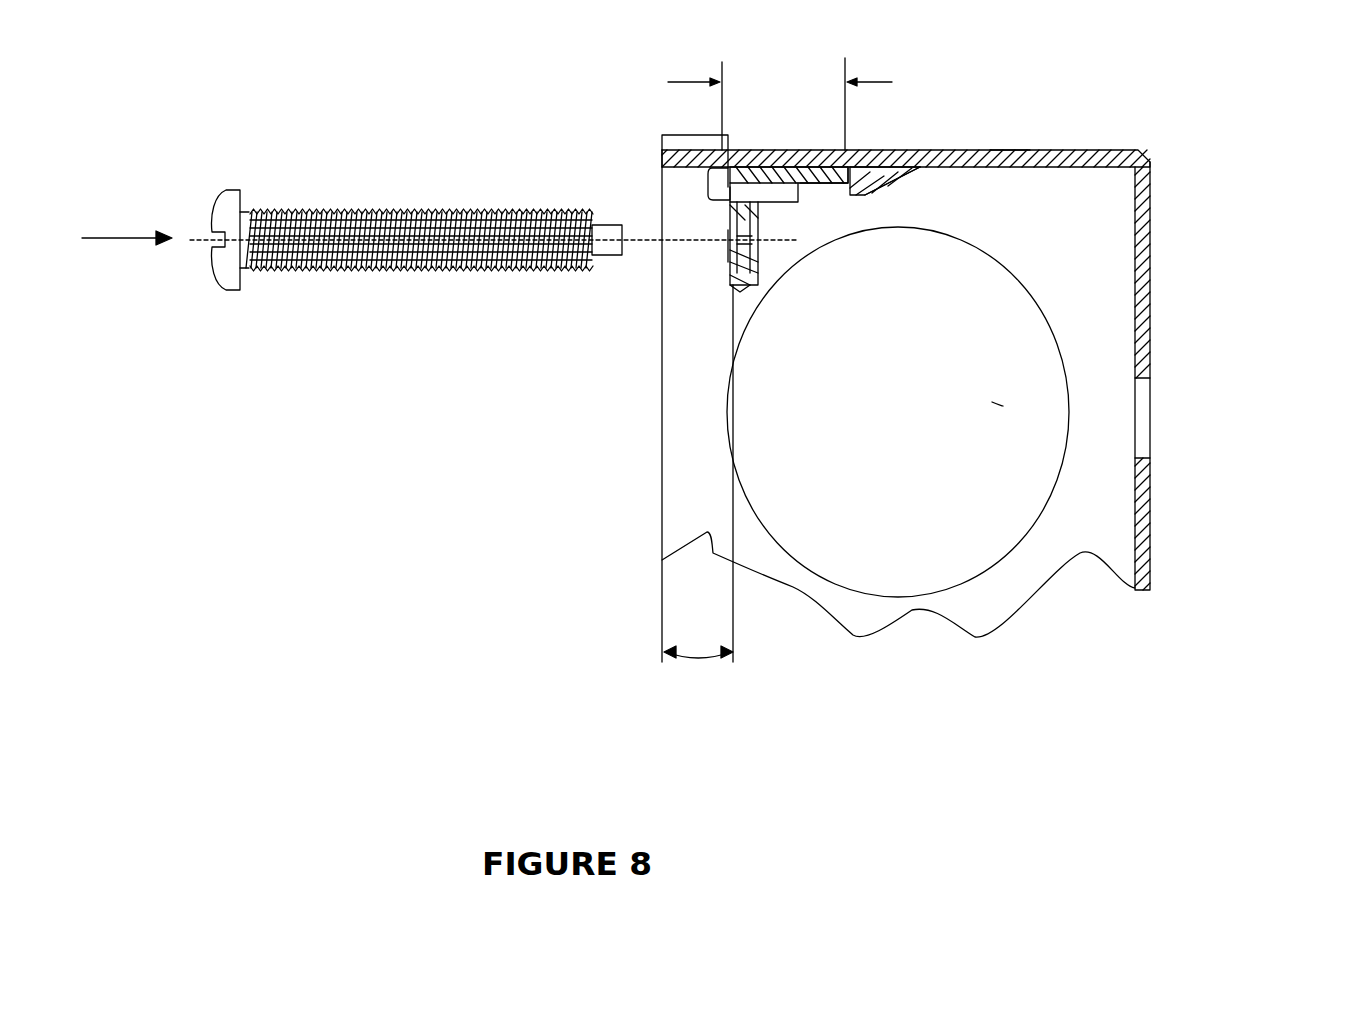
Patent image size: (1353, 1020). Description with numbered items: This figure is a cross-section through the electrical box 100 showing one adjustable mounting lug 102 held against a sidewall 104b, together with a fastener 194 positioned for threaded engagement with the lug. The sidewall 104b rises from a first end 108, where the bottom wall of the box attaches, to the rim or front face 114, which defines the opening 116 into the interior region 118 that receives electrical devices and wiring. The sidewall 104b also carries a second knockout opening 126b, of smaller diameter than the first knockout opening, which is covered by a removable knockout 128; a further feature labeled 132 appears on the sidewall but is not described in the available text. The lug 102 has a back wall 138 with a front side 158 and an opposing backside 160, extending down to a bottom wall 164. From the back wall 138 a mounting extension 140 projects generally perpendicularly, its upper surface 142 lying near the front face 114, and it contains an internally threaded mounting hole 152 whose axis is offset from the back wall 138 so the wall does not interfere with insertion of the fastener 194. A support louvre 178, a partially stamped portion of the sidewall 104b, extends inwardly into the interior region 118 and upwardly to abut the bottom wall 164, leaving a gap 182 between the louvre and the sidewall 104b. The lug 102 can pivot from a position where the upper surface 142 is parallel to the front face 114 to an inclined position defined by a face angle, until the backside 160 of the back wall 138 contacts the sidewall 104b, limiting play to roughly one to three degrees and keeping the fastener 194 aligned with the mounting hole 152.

The electrical box 100 is at (1224, 256).
The adjustable mounting lug 102 is at (795, 170).
The sidewall 104b is at (1062, 150).
The first end 108 is at (1108, 150).
The front face 114 is at (660, 158).
The opening 116 is at (662, 462).
The interior region 118 is at (1115, 553).
The second knockout opening 126b is at (940, 433).
The knockout 128 is at (1003, 406).
The top wall outer surface 132 is at (1003, 162).
The back wall 138 is at (742, 175).
The mounting extension 140 is at (747, 270).
The upper surface 142 is at (743, 273).
The mounting hole 152 is at (747, 245).
The front side 158 is at (826, 172).
The backside 160 is at (776, 176).
The bottom wall 164 is at (858, 164).
The support louvre 178 is at (890, 175).
The gap 182 is at (873, 160).
The fastener 194 is at (332, 215).